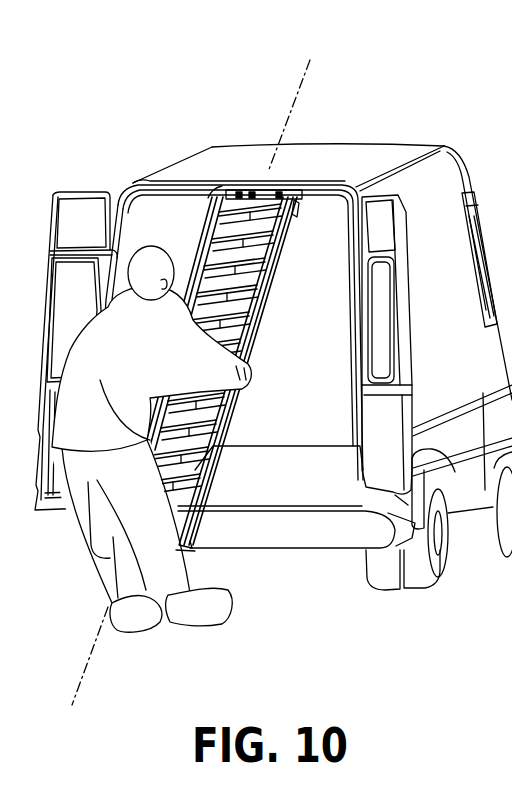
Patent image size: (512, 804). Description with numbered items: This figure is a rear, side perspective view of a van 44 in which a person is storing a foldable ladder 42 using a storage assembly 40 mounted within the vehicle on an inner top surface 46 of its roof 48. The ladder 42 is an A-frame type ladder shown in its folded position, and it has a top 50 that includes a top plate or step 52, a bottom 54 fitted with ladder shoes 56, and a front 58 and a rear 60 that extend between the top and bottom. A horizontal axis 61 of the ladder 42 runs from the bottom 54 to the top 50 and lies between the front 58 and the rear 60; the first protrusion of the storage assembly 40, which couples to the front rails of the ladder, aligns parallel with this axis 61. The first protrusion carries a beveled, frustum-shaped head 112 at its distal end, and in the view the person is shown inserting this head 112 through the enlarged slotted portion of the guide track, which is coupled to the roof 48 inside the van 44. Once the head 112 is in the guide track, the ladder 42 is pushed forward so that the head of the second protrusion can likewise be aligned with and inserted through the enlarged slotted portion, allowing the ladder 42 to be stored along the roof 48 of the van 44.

The storage assembly 40 is at (313, 211).
The foldable ladder 42 is at (240, 320).
The van 44 is at (273, 367).
The inner top surface 46 is at (153, 208).
The roof 48 is at (346, 174).
The top 50 is at (208, 198).
The top plate or step 52 is at (298, 206).
The bottom 54 is at (190, 539).
The ladder shoes 56 is at (177, 551).
The front 58 is at (194, 255).
The rear 60 is at (275, 309).
The horizontal axis 61 is at (305, 72).
The head 112 is at (236, 192).